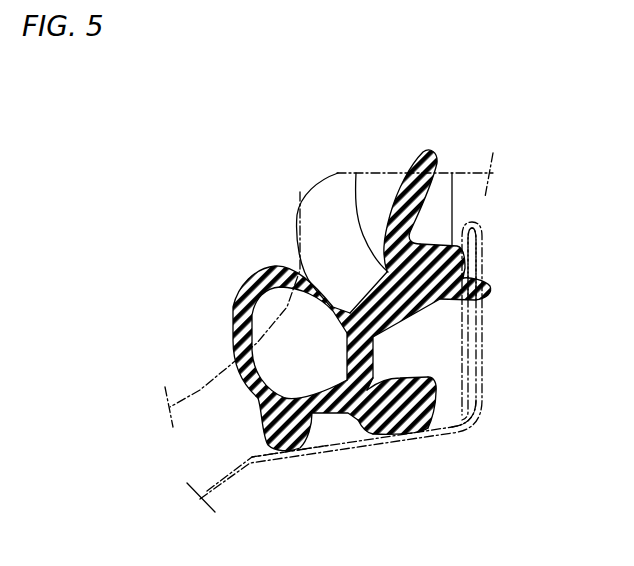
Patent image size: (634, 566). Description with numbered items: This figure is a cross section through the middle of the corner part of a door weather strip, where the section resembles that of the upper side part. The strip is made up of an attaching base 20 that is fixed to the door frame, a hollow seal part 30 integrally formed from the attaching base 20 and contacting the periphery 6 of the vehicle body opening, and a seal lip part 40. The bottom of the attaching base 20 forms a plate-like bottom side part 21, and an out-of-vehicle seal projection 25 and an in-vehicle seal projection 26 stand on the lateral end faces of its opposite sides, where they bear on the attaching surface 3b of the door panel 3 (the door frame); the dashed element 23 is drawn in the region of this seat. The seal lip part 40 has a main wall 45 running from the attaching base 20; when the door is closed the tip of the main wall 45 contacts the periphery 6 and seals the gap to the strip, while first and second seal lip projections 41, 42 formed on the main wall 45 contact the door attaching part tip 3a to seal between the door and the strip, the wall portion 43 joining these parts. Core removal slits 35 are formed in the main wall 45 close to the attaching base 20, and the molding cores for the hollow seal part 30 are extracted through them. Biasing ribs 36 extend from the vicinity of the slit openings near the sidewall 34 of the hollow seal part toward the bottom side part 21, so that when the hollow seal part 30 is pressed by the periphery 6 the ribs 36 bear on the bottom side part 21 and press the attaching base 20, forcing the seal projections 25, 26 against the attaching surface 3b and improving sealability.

The door panel 3 is at (480, 412).
The door attaching part tip 3a is at (483, 270).
The attaching surface 3b is at (307, 450).
The periphery of the vehicle body opening 6 is at (338, 172).
The attaching base 20 is at (437, 413).
The bottom side part 21 is at (350, 382).
The lower seal lip 23 is at (433, 387).
The out-of-vehicle seal projection 25 is at (420, 437).
The in-vehicle seal projection 26 is at (270, 452).
The hollow seal part 30 is at (230, 303).
The sidewall of the hollow seal part 34 is at (297, 228).
The core removal slits 35 is at (387, 437).
The biasing ribs 36 is at (368, 436).
The seal lip part 40 is at (420, 158).
The first seal lip projection 41 is at (452, 190).
The second seal lip projection 42 is at (492, 296).
The main body wall 43 is at (407, 323).
The main wall 45 is at (356, 172).